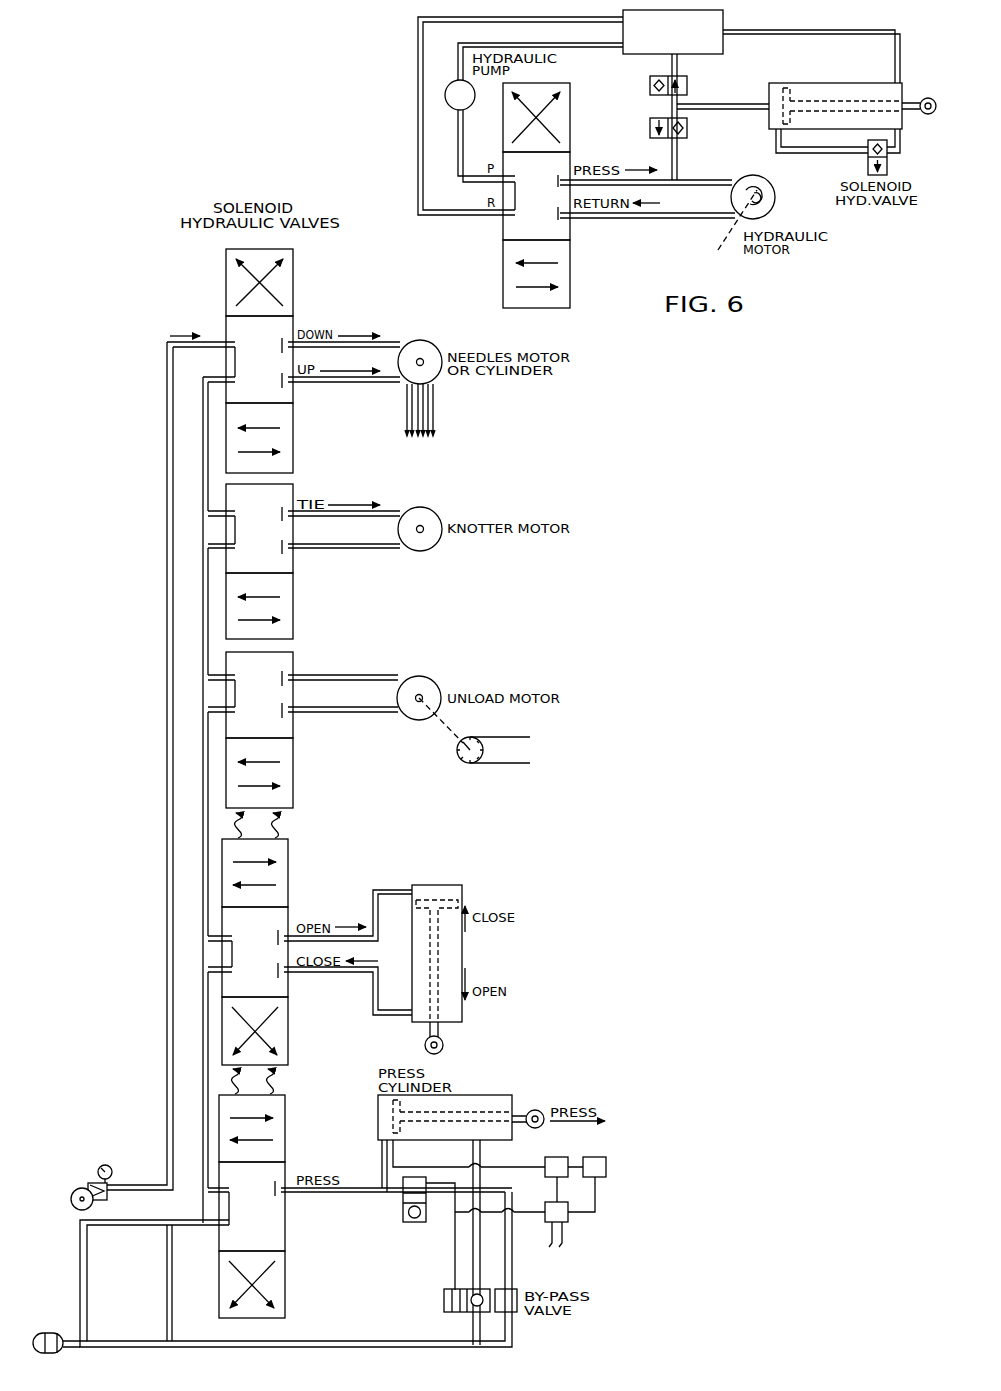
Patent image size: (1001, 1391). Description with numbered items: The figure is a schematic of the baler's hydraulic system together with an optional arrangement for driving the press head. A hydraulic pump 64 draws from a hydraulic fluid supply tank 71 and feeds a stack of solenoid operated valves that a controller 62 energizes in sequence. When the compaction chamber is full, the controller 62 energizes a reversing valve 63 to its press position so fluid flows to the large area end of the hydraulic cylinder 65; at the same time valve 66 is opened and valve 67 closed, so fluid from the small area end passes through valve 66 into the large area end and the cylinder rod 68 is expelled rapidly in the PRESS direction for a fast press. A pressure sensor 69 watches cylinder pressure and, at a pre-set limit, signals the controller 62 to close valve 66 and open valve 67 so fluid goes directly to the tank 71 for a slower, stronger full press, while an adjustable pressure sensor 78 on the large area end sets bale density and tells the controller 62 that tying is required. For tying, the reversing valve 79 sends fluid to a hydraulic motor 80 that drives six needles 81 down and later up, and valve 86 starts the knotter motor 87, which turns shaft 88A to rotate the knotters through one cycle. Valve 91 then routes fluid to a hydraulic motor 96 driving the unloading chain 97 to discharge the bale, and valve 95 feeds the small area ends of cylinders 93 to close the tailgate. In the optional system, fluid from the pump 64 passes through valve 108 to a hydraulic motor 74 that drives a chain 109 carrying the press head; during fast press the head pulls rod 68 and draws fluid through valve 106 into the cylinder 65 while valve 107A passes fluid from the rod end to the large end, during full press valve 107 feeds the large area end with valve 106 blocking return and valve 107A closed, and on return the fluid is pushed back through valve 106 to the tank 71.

In FIG. 4, the controller 62 is at (556, 1224).
In FIG. 4, the solenoid controlled hydraulic reversing valve 63 is at (275, 1215).
In FIG. 6, the hydraulic pump 64 is at (469, 103).
In FIG. 4, the hydraulic pump 64 is at (70, 1200).
In FIG. 6, the hydraulic cylinder 65 is at (845, 82).
In FIG. 4, the hydraulic cylinder 65 is at (482, 1094).
In FIG. 4, the solenoid operated hydraulic valve 66 is at (405, 1208).
In FIG. 4, the solenoid operated hydraulic valve 67 is at (444, 1303).
In FIG. 6, the cylinder rod 68 is at (931, 95).
In FIG. 4, the cylinder rod 68 is at (525, 1109).
In FIG. 4, the pressure sensor 69 is at (556, 1167).
In FIG. 6, the hydraulic fluid supply tank 71 is at (714, 42).
In FIG. 4, the hydraulic fluid supply tank 71 is at (50, 1332).
In FIG. 6, the hydraulic motor 74 is at (750, 175).
In FIG. 4, the adjustable pressure sensor 78 is at (594, 1167).
In FIG. 4, the hydraulic reversing valve 79 is at (292, 395).
In FIG. 4, the hydraulic motor 80 is at (430, 340).
In FIG. 4, the needles 81 is at (406, 400).
In FIG. 4, the valve 86 is at (293, 567).
In FIG. 4, the knotter motor 87 is at (433, 509).
In FIG. 4, the shaft 88A is at (420, 533).
In FIG. 4, the valve 91 is at (293, 735).
In FIG. 4, the cylinders 93 is at (450, 860).
In FIG. 4, the valve 95 is at (288, 903).
In FIG. 4, the hydraulic motor 96 is at (437, 680).
In FIG. 4, the unloading chain 97 is at (523, 765).
In FIG. 6, the valve 106 is at (650, 86).
In FIG. 6, the valve 107 is at (650, 128).
In FIG. 6, the valve 107A is at (868, 170).
In FIG. 6, the valve 108 is at (560, 99).
In FIG. 6, the chain 109 is at (720, 226).